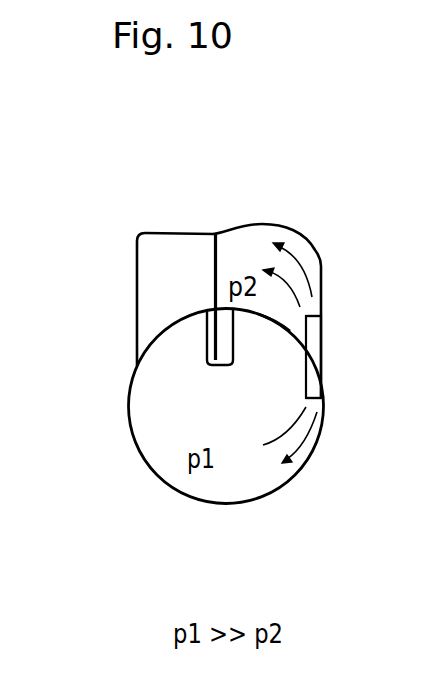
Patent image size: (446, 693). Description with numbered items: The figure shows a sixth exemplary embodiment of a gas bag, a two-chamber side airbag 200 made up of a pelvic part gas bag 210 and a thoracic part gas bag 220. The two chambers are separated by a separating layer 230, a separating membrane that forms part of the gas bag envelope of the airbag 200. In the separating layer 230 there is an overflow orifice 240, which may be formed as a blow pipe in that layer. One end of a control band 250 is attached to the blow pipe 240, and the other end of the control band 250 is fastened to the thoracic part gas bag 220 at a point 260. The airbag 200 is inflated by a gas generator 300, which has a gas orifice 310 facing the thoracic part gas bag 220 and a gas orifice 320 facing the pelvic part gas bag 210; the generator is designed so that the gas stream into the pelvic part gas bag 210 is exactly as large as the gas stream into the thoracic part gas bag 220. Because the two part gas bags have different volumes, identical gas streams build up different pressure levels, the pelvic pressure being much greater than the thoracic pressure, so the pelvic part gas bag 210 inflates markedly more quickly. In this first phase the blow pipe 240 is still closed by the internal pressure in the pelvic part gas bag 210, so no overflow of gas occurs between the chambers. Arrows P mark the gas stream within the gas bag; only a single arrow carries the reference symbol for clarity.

The two-chamber side airbag 200 is at (124, 418).
The pelvic part gas bag 210 is at (157, 478).
The thoracic part gas bag 220 is at (137, 308).
The separating layer 230 is at (273, 318).
The overflow orifice 240 is at (204, 356).
The control band 250 is at (216, 290).
The fastening point 260 is at (215, 235).
The gas generator 300 is at (321, 340).
The gas orifice 310 is at (317, 310).
The gas orifice 320 is at (322, 402).
The arrows P is at (303, 440).